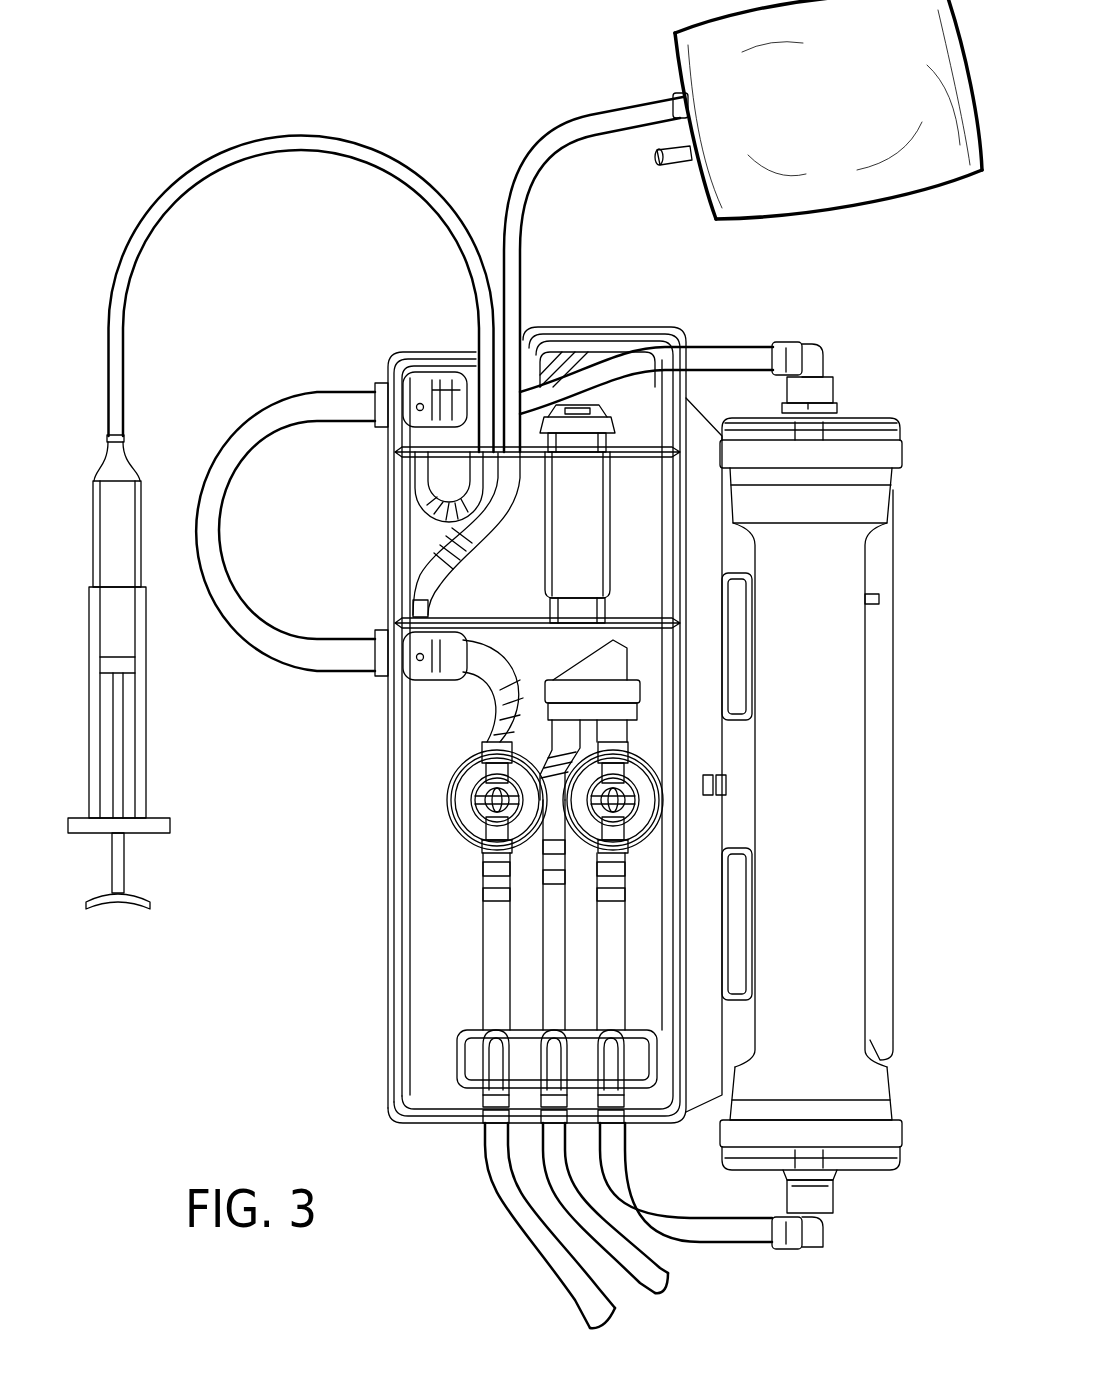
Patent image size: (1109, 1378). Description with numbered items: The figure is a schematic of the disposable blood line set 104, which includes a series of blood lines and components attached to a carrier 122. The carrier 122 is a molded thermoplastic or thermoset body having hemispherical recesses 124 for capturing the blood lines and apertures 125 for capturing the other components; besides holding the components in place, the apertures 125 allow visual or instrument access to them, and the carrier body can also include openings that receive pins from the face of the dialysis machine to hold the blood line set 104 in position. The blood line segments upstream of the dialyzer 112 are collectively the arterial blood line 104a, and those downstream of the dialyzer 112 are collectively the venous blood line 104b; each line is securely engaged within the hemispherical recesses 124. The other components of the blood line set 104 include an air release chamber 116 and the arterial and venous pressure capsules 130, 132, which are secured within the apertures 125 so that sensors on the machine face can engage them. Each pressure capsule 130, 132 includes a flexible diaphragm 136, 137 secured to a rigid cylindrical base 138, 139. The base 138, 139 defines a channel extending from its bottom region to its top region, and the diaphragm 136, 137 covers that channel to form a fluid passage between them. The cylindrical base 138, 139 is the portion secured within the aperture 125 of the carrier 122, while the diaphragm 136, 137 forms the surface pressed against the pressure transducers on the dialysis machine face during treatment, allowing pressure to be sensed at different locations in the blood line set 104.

The disposable blood line set 104 is at (573, 1225).
The arterial blood line 104a is at (563, 400).
The venous blood line 104b is at (643, 1207).
The dialyzer 112 is at (840, 718).
The air release chamber 116 is at (577, 497).
The carrier 122 is at (428, 972).
The hemispherical recesses 124 is at (478, 1000).
The apertures 125 is at (603, 835).
The arterial pressure capsule 130 is at (391, 775).
The venous pressure capsule 132 is at (625, 838).
The flexible diaphragm 136 is at (457, 800).
The flexible diaphragm 137 is at (647, 803).
The rigid cylindrical base 138 is at (457, 826).
The rigid cylindrical base 139 is at (640, 830).